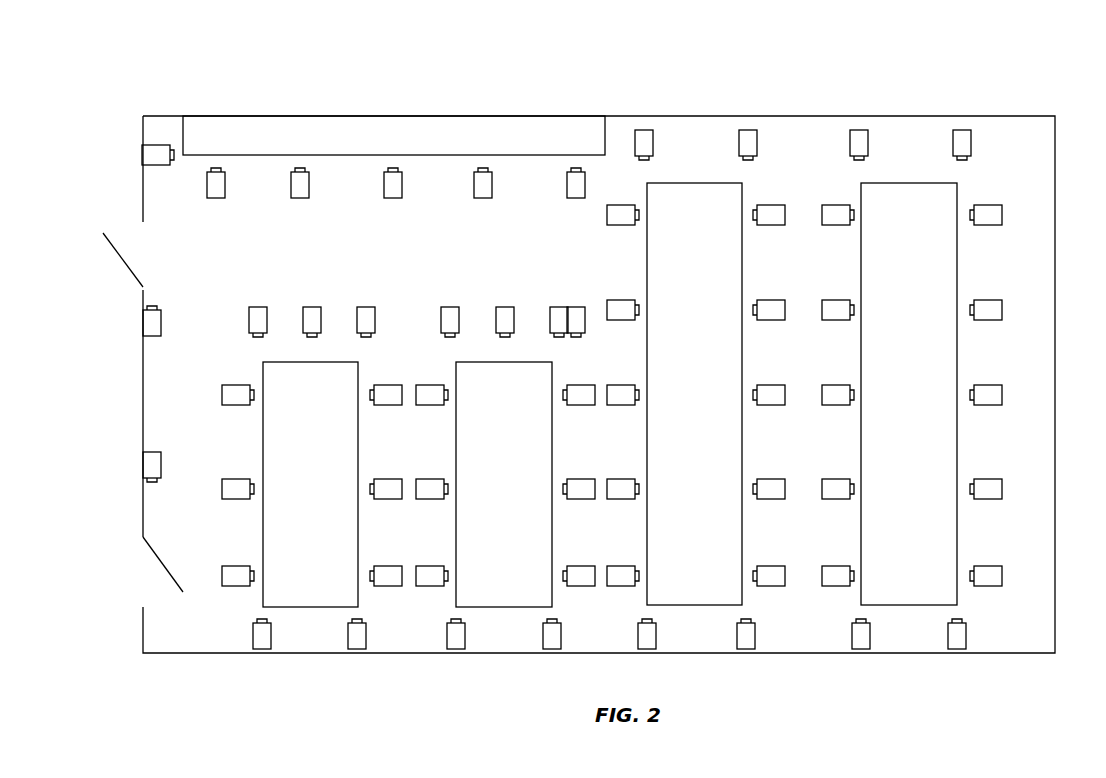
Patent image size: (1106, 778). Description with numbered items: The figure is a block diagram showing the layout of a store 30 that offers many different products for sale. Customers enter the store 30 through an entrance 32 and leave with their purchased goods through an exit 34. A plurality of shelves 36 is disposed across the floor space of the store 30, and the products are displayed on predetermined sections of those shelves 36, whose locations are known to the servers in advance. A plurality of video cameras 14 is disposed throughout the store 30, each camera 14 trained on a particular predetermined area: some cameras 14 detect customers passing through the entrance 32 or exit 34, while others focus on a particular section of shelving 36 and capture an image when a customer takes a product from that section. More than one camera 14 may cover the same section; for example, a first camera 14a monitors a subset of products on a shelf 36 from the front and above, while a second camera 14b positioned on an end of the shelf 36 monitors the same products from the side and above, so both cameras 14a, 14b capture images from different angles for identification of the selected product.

The store 30 is at (1000, 70).
The entrance 32 is at (140, 580).
The exit 34 is at (140, 245).
The shelves 36 is at (570, 361).
The video cameras 14 is at (738, 140).
The first camera 14a is at (822, 490).
The second camera 14b is at (607, 307).